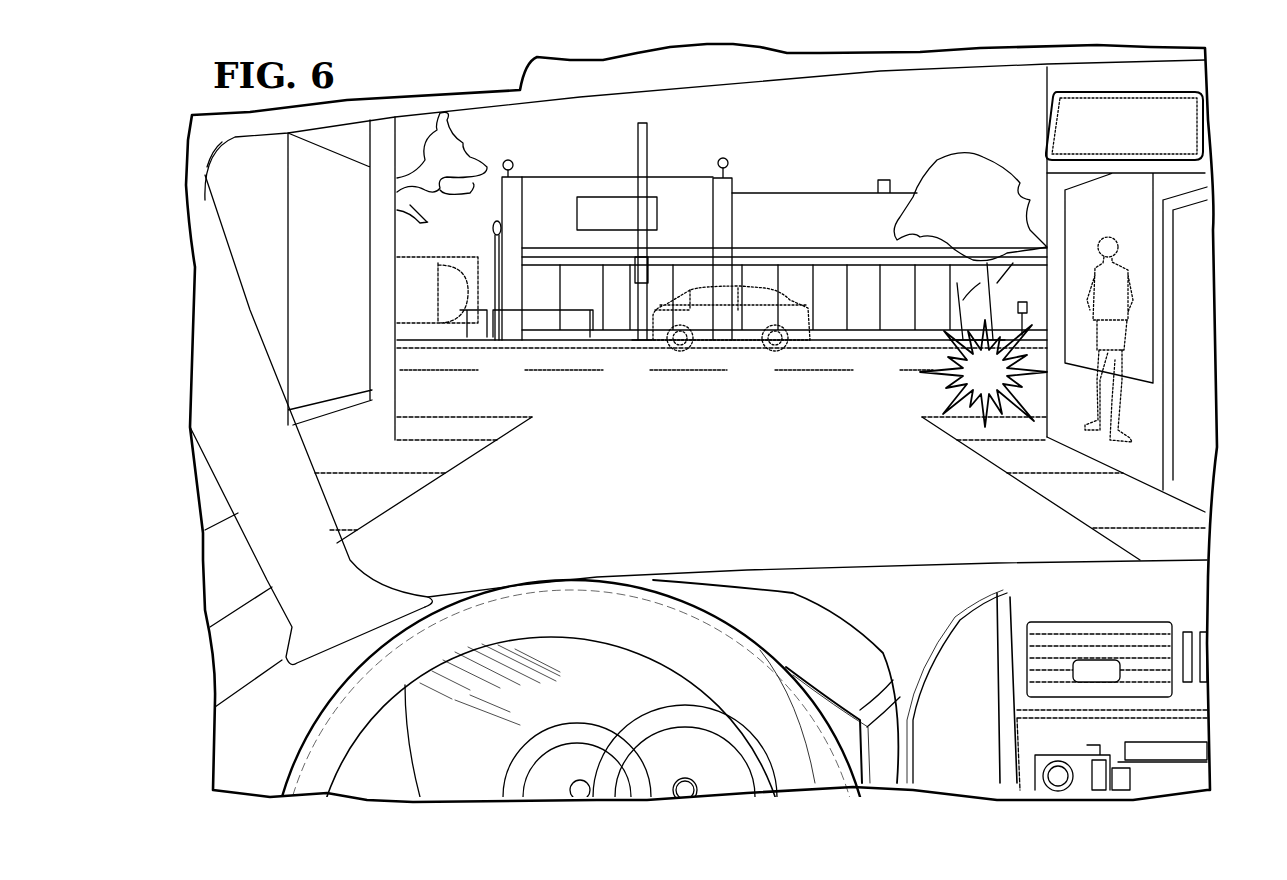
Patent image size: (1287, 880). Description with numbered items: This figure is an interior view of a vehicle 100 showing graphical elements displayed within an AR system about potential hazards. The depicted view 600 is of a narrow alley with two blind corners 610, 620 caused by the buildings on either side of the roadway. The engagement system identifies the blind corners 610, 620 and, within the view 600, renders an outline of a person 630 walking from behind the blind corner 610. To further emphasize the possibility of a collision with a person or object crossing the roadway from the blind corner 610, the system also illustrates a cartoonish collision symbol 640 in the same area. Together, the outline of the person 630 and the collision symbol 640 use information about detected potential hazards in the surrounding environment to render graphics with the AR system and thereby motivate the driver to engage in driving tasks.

The vehicle 100 is at (957, 735).
The view 600 is at (497, 85).
The blind corner 610 is at (1046, 267).
The blind corner 620 is at (396, 273).
The outline of a person 630 is at (1128, 330).
The collision symbol 640 is at (927, 397).